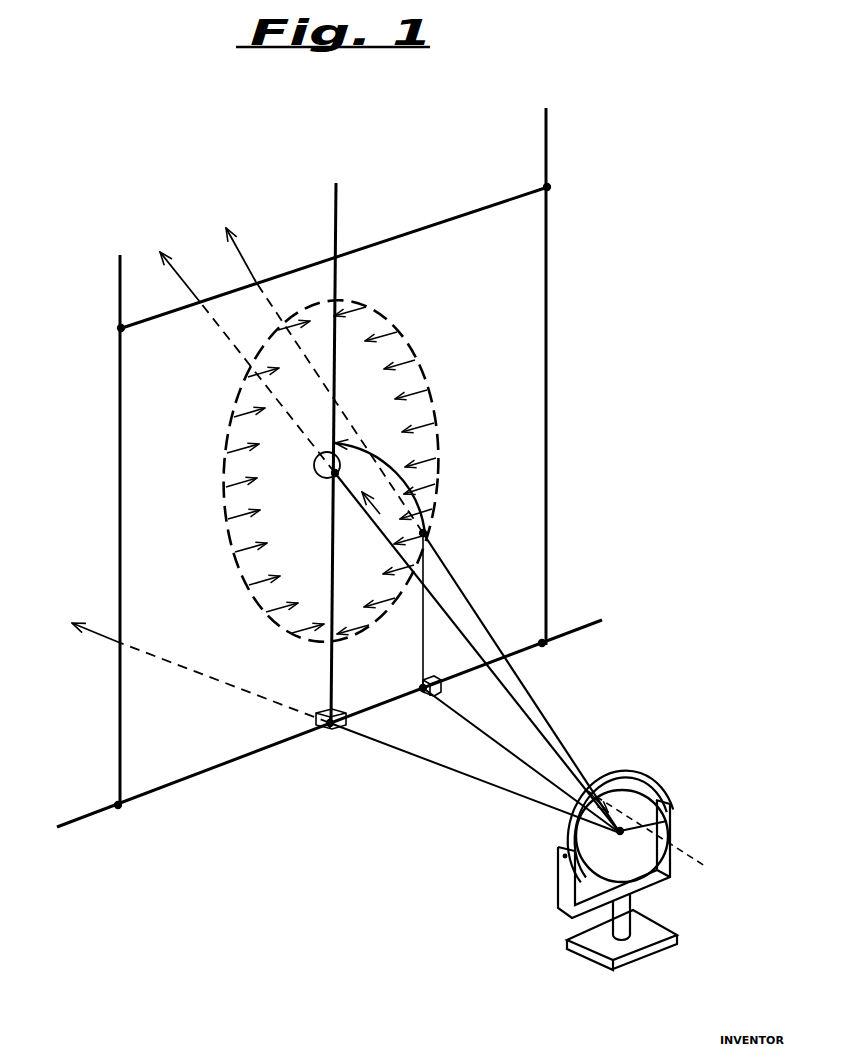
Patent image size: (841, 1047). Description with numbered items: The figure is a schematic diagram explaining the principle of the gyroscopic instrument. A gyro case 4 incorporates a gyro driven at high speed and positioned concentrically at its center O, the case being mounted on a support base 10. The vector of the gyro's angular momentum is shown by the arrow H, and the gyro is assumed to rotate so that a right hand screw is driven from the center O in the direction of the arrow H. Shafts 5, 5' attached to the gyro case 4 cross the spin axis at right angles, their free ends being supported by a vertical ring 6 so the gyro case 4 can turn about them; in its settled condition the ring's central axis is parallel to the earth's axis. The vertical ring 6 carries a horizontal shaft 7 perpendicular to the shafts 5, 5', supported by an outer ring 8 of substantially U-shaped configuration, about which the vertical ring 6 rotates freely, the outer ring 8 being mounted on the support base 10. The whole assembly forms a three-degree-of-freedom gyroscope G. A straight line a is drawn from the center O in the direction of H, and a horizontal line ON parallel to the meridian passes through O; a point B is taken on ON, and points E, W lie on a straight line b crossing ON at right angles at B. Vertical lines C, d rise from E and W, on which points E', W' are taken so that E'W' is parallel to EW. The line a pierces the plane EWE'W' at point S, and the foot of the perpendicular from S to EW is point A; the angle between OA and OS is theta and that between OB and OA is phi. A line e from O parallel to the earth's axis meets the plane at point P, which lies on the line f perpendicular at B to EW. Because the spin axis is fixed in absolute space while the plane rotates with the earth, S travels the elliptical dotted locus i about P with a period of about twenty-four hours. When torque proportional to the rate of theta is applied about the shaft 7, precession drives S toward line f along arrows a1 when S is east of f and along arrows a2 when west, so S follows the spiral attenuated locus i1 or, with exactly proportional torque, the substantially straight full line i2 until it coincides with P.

The gyro case 4 is at (662, 840).
The shaft 5 is at (621, 839).
The shaft 5' is at (538, 895).
The vertical ring 6 is at (640, 779).
The horizontal shaft 7 is at (570, 836).
The outer ring 8 is at (558, 868).
The support base 10 is at (650, 946).
The three-degree-of-freedom gyroscope G is at (616, 766).
The center of the gyro O is at (615, 846).
The angular momentum vector H is at (666, 821).
The point P is at (321, 482).
The point S is at (432, 533).
The point A is at (423, 692).
The point B is at (330, 727).
The point E is at (546, 659).
The point E' is at (562, 188).
The point W is at (124, 823).
The point W' is at (100, 330).
The point N is at (185, 666).
The straight line c C is at (547, 566).
The straight line d is at (120, 712).
The straight line b is at (75, 823).
The straight line f is at (336, 278).
The straight line a is at (476, 628).
The straight line e is at (458, 621).
The dotted line i is at (410, 461).
The locus i1 is at (410, 496).
The full line i2 is at (400, 535).
The arrows a1 is at (440, 406).
The arrows a2 is at (223, 534).